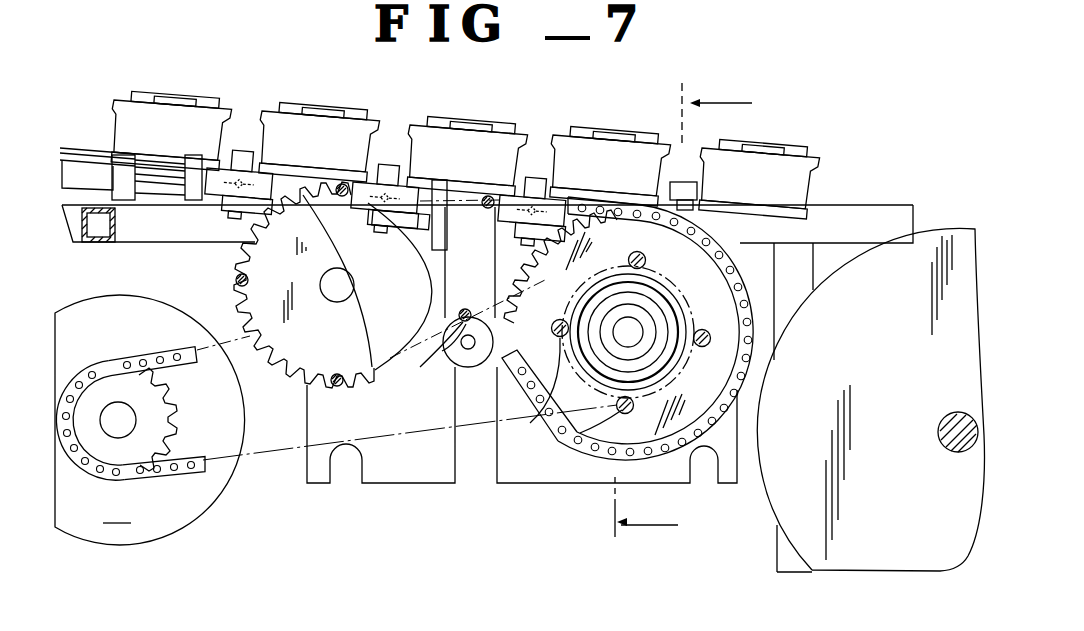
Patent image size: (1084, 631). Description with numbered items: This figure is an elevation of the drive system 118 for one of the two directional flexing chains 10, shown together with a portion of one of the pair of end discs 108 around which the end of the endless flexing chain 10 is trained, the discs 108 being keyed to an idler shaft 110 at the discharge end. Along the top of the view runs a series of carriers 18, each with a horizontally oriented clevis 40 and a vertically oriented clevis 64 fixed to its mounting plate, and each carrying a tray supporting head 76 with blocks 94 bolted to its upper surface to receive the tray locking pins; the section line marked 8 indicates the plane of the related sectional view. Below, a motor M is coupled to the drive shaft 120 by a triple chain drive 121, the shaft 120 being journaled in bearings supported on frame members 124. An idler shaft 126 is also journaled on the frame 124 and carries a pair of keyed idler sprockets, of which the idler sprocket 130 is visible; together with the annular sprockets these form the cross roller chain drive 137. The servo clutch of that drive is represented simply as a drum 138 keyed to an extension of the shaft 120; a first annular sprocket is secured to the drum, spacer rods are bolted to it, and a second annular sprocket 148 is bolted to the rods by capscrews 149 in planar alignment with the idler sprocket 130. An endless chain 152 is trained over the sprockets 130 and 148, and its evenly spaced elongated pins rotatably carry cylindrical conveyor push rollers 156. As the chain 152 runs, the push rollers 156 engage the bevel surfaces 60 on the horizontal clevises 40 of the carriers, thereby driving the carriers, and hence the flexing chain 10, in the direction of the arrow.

The two directional flexing chain 10 is at (474, 209).
The block 94 is at (160, 90).
The tray supporting head 76 is at (270, 97).
The conveyor push roller 156 is at (340, 185).
The carrier 18 is at (610, 130).
The section line 8- 8 is at (670, 310).
The frame member 124 is at (900, 204).
The bevel surface 60 is at (360, 237).
The horizontally oriented clevis 40 is at (218, 198).
The vertically oriented clevis 64 is at (423, 182).
The endless chain 152 is at (611, 208).
The cross roller chain drive 137 is at (775, 267).
The idler shaft 126 is at (343, 284).
The idler sprocket 130 is at (350, 340).
The second annular sprocket 148 is at (733, 318).
The drive shaft 120 is at (642, 332).
The drum 138 is at (675, 372).
The disc 108 is at (953, 391).
The triple chain drive 121 is at (173, 344).
The capscrew 149 is at (572, 432).
The idler shaft 110 is at (940, 446).
The drive system 118 is at (291, 455).